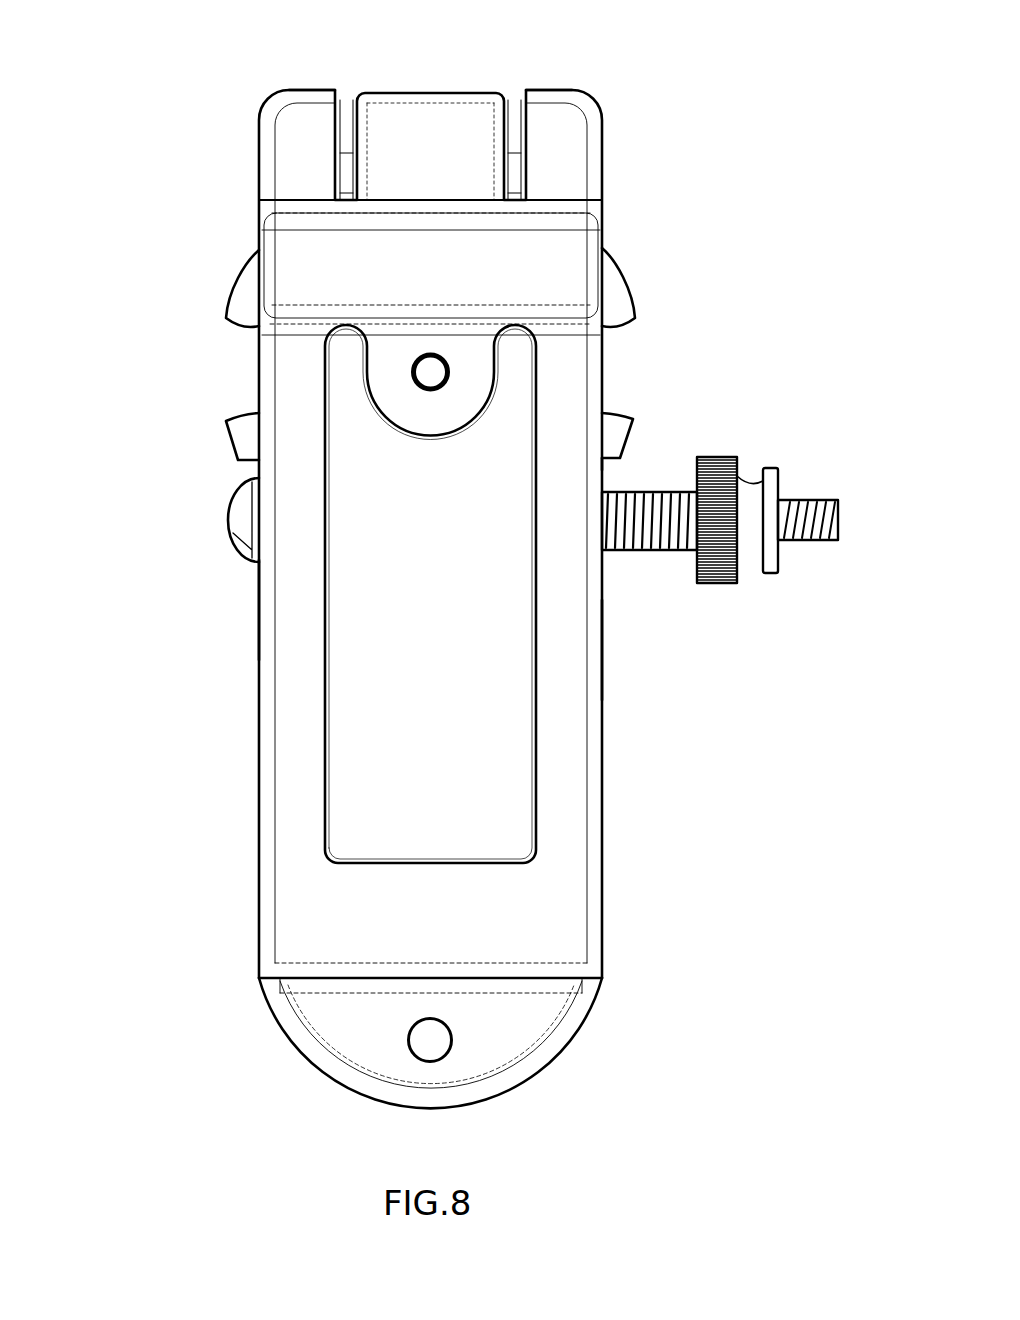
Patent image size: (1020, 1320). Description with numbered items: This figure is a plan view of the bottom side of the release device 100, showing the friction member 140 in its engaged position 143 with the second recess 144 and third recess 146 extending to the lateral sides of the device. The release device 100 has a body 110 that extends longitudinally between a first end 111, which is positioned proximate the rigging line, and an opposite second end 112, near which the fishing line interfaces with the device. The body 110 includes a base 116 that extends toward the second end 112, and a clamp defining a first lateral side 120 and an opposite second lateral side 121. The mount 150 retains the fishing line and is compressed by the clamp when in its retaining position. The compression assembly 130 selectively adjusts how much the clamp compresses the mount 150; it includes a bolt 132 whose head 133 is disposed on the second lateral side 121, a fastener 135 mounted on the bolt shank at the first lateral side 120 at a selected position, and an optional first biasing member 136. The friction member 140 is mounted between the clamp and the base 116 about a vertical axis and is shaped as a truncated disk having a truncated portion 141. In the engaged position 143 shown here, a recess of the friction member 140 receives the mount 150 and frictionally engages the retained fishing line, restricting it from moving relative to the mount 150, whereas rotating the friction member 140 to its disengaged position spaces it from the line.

The release device 100 is at (472, 571).
The body 110 is at (410, 583).
The first end 111 is at (430, 1110).
The second end 112 is at (545, 92).
The base 116 is at (563, 742).
The first lateral side 120 is at (601, 640).
The second lateral side 121 is at (258, 607).
The compression assembly 130 is at (741, 510).
The bolt 132 is at (820, 500).
The head 133 is at (238, 507).
The fastener 135 is at (745, 547).
The first biasing member 136 is at (627, 552).
The friction member 140 is at (654, 319).
The truncated portion 141 is at (610, 462).
The engaged position 143 is at (642, 277).
The second recess 144 is at (615, 417).
The third recess 146 is at (237, 323).
The mount 150 is at (458, 80).